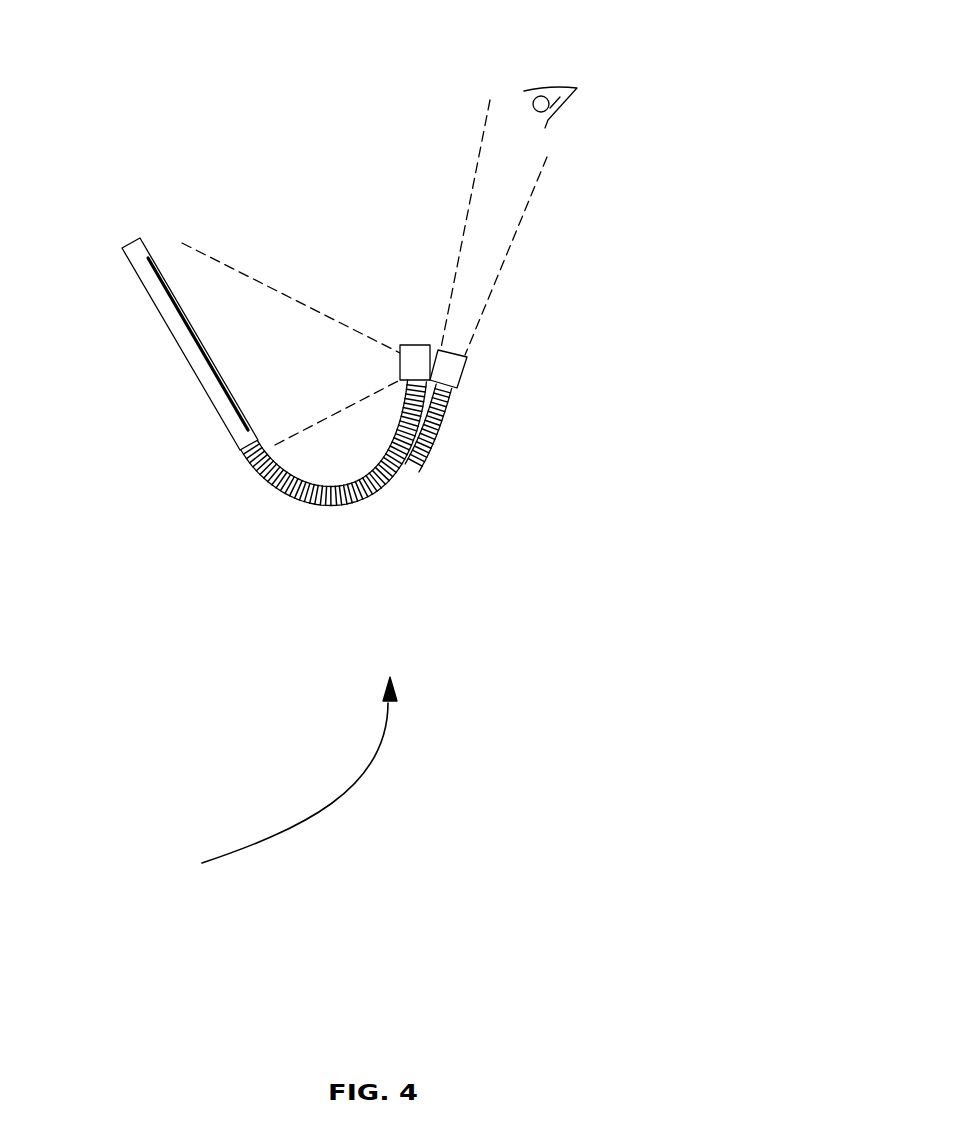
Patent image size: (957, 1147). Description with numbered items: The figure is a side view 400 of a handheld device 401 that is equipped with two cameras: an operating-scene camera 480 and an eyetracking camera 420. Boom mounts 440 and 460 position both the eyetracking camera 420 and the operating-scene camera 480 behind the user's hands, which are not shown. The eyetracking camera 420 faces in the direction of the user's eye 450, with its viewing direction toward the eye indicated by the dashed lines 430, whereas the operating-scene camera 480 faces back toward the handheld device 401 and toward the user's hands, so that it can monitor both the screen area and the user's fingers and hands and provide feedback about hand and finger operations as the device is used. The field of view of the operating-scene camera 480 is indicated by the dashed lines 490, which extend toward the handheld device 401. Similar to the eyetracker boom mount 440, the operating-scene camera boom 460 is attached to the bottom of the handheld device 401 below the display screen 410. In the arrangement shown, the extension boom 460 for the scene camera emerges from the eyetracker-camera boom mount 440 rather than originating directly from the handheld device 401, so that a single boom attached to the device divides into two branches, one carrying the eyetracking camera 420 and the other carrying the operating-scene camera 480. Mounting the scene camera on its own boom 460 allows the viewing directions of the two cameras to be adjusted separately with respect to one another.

The side view 400 is at (272, 778).
The handheld device 401 is at (124, 244).
The display screen 410 is at (164, 262).
The eyetracking camera 420 is at (443, 349).
The field of view of viewing element 430 is at (497, 277).
The eyetracker-camera boom mount 440 is at (402, 473).
The user's eye 450 is at (577, 88).
The operating-scene camera boom 460 is at (403, 432).
The operating-scene camera 480 is at (413, 344).
The dashed lines 490 is at (378, 390).